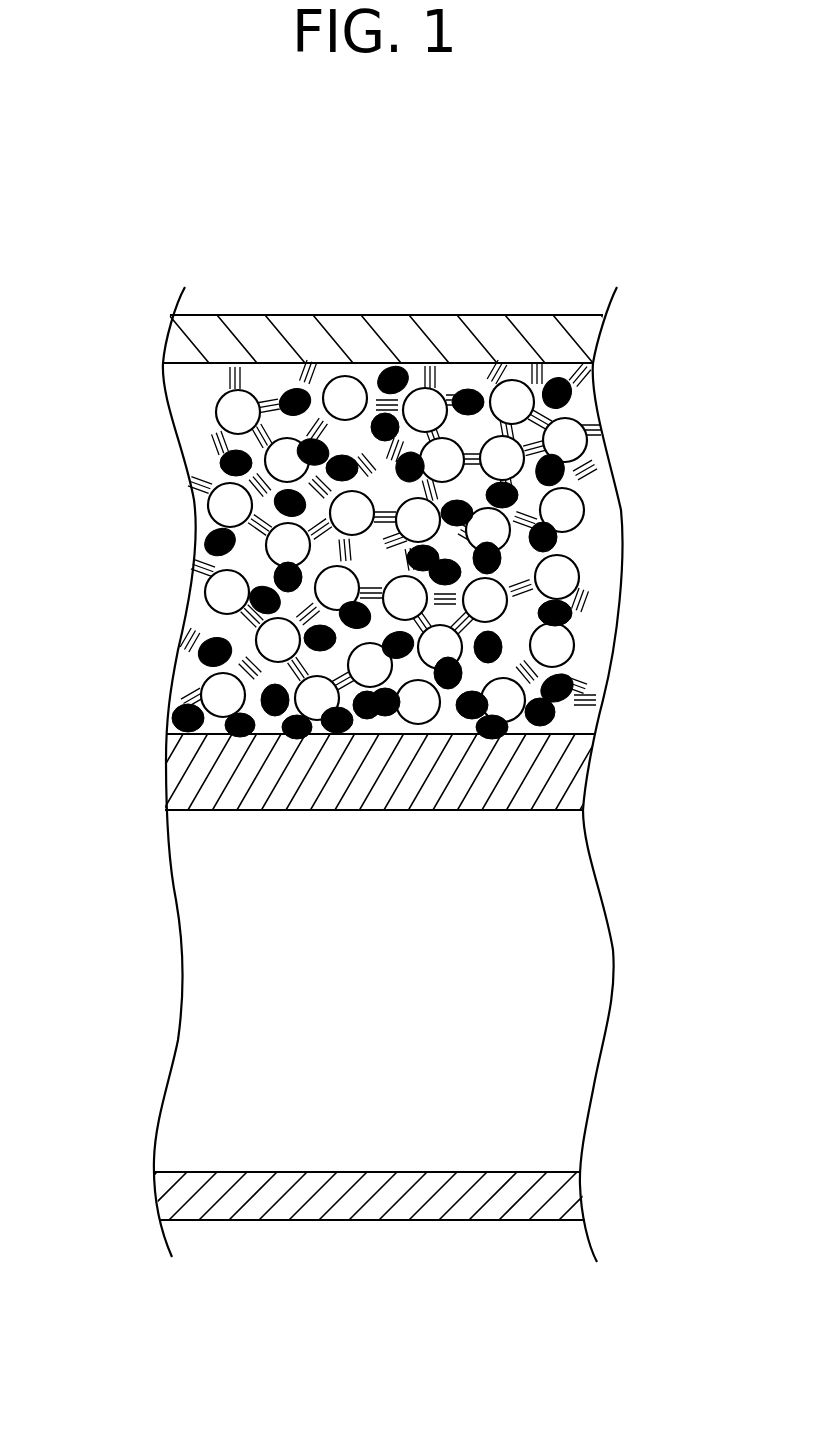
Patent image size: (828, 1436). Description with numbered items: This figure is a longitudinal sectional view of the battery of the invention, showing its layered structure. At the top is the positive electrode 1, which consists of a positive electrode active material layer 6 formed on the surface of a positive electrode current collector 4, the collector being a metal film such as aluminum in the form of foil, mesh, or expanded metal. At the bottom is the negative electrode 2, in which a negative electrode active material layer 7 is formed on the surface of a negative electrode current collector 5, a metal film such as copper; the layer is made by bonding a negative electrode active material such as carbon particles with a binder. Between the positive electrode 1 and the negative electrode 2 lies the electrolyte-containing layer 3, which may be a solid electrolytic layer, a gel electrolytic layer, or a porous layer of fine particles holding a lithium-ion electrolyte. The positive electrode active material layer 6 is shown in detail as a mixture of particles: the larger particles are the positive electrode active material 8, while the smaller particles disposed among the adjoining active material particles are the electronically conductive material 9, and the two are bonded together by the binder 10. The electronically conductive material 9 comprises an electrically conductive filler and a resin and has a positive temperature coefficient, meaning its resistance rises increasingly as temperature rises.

The positive electrode 1 is at (124, 318).
The negative electrode 2 is at (121, 810).
The electrolyte-containing layer 3 is at (188, 773).
The positive electrode current collector 4 is at (541, 332).
The negative electrode current collector 5 is at (497, 1200).
The positive electrode active material layer 6 is at (600, 537).
The negative electrode active material layer 7 is at (585, 955).
The positive electrode active material 8 is at (570, 447).
The electronically conductive material 9 is at (570, 703).
The binder 10 is at (580, 382).